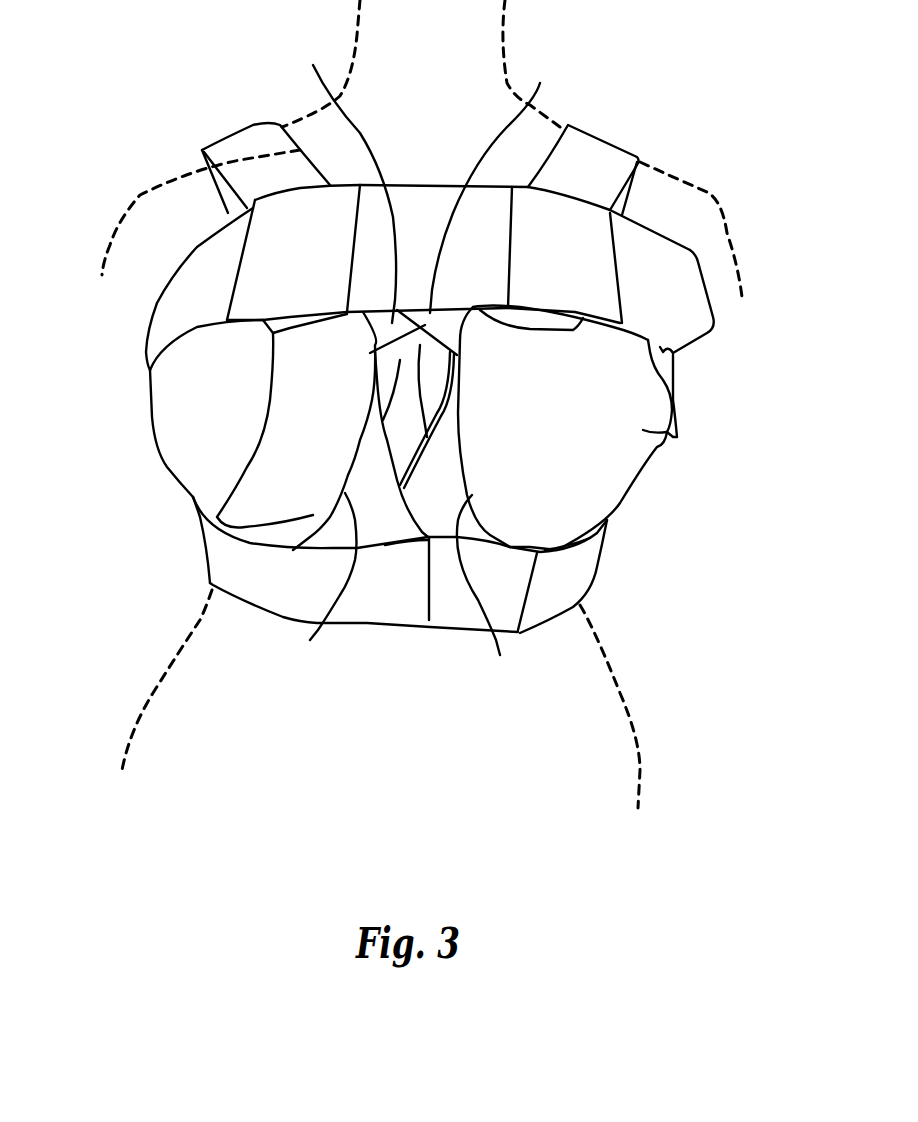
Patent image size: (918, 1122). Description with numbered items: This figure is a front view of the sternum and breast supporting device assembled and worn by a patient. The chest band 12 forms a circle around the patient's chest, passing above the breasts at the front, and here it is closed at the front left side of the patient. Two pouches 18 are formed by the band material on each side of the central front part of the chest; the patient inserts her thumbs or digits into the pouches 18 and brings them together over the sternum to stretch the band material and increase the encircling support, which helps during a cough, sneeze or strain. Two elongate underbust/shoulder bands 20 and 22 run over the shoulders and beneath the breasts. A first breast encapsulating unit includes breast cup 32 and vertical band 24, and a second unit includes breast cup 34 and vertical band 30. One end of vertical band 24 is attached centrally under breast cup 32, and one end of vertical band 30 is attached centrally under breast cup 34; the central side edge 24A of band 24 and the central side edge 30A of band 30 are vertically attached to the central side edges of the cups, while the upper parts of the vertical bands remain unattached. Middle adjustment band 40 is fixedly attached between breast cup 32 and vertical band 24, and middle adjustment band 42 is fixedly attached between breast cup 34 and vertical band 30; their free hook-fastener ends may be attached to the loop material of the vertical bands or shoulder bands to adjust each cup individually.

The chest band 12 is at (690, 320).
The pouches 18 is at (237, 278).
The first elongate underbust/shoulder band 20 is at (213, 140).
The second elongate underbust/shoulder band 22 is at (600, 137).
The vertical band 24 is at (280, 457).
The central side edge of band 24 24A is at (321, 589).
The vertical band 30 is at (563, 513).
The central side edge of band 30 30A is at (490, 591).
The breast cup 32 is at (170, 415).
The breast cup 34 is at (633, 450).
The middle adjustment band 40 is at (346, 177).
The middle adjustment band 42 is at (462, 293).